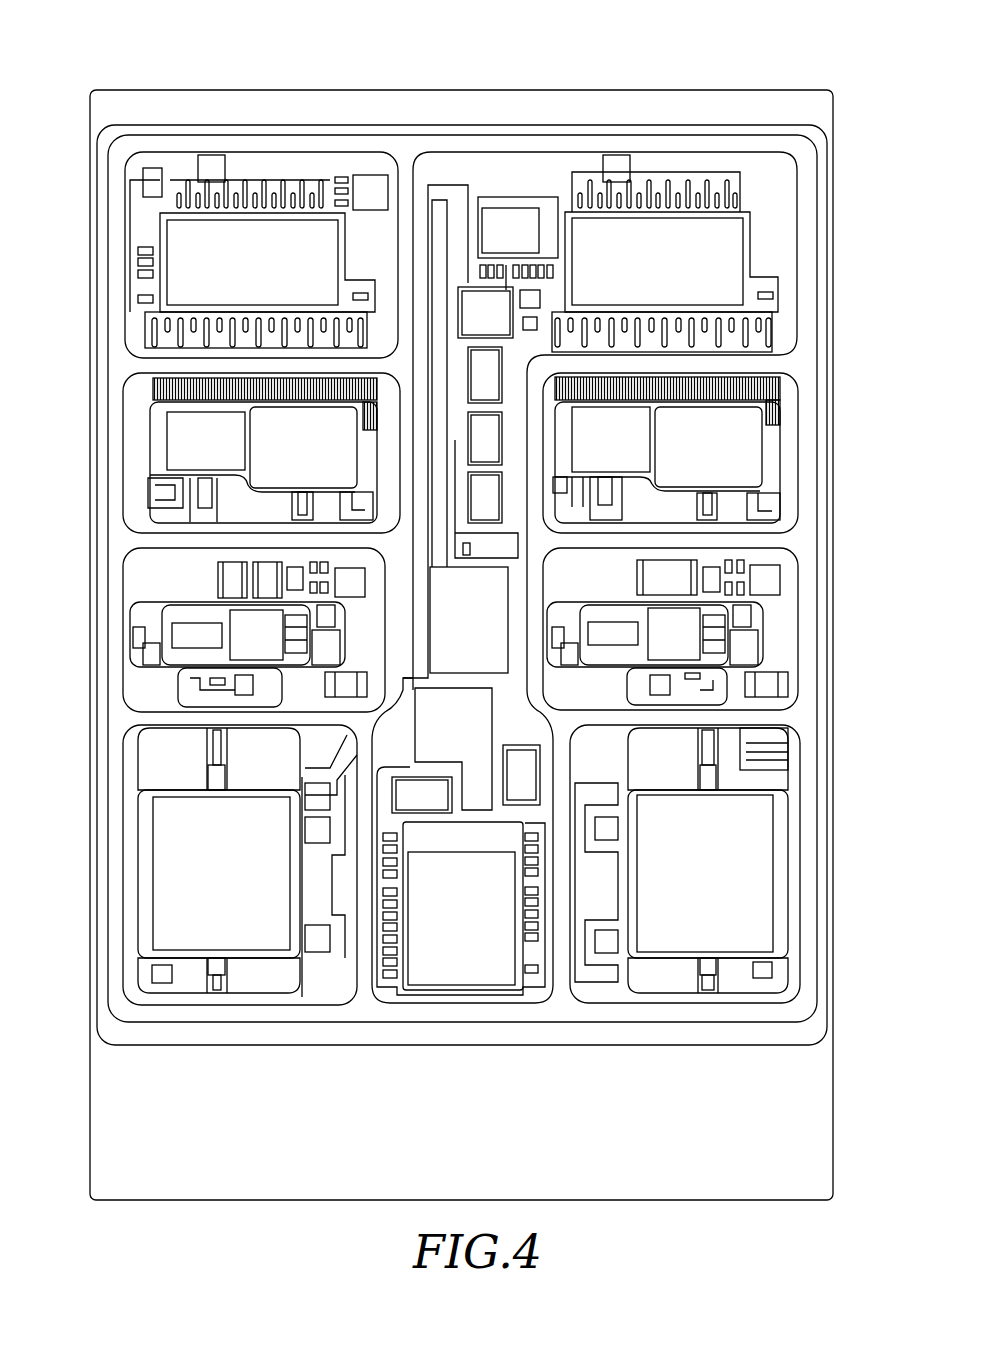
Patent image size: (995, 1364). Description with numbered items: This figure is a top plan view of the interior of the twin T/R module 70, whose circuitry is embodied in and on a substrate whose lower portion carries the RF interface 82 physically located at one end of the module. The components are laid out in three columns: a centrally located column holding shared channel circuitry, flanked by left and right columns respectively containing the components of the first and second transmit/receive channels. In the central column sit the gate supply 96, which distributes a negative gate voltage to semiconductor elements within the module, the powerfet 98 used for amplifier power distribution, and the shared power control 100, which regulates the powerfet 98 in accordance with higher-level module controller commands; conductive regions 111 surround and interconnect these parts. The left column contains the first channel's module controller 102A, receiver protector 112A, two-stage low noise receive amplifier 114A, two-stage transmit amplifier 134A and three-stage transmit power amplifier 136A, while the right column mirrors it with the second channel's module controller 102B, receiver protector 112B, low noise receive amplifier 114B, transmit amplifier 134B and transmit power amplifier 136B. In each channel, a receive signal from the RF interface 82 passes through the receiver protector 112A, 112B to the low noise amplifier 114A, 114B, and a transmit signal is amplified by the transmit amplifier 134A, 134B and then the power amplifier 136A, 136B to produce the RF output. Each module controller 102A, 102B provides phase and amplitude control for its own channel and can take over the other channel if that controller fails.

The twin T/R module 70 is at (141, 73).
The RF interface 82 is at (810, 1102).
The gate supply 96 is at (528, 232).
The powerfet unit 98 is at (460, 658).
The shared power control 100 is at (452, 977).
The module controller 102A is at (172, 230).
The module controller 102B is at (735, 232).
The conductive trace region 111 is at (118, 357).
The receiver protector 112A is at (185, 657).
The receiver protector 112B is at (710, 658).
The low noise receive amplifier 114A is at (240, 618).
The low noise receive amplifier 114B is at (667, 622).
The transmit amplifier 134A is at (185, 443).
The transmit amplifier 134B is at (735, 441).
The transmit power amplifier 136A is at (162, 878).
The transmit power amplifier 136B is at (765, 880).